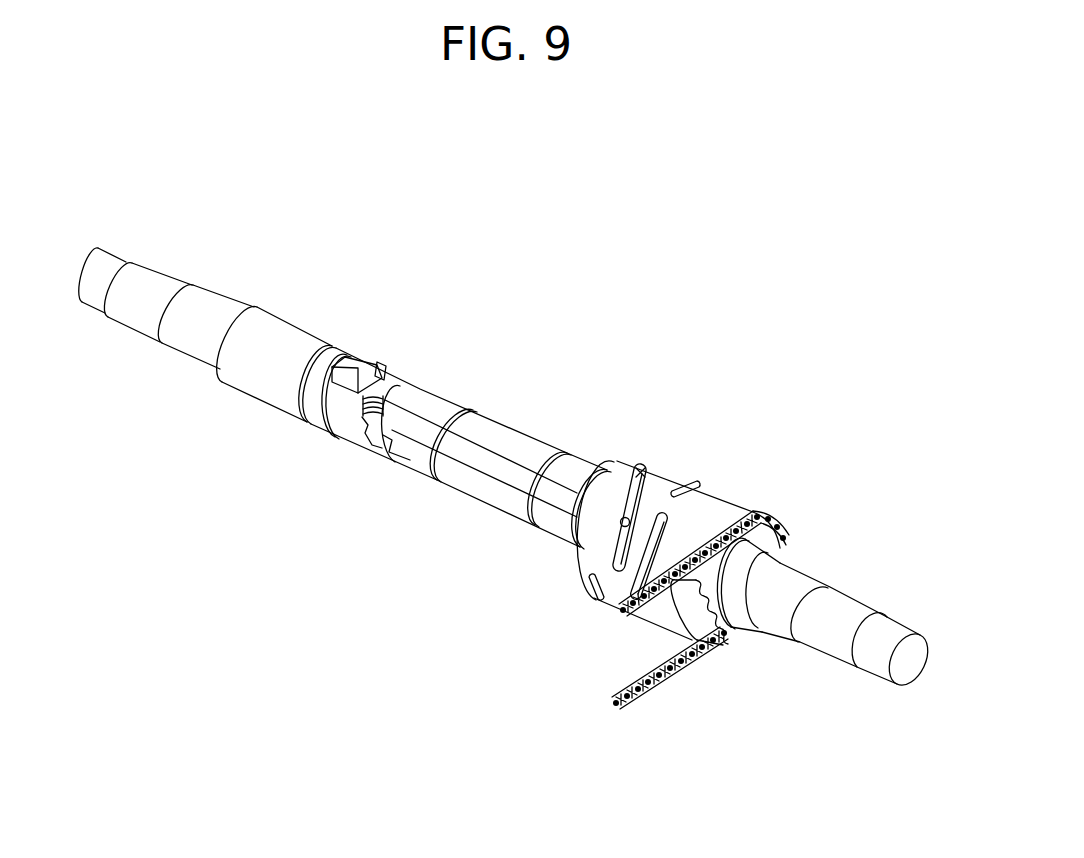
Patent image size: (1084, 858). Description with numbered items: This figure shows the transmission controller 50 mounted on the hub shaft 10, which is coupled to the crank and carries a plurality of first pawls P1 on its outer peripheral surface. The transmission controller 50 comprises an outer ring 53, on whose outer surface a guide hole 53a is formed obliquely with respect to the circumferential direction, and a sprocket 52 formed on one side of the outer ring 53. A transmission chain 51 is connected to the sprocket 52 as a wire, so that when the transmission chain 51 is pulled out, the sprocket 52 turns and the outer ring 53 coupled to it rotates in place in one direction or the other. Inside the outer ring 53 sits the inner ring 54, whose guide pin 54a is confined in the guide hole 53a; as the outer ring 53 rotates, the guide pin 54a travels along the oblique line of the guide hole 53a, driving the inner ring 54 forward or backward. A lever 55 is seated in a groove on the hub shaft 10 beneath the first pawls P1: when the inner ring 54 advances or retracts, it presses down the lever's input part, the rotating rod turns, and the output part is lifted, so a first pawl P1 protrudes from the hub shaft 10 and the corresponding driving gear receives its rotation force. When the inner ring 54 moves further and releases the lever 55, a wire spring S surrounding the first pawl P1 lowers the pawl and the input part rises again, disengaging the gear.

The hub shaft 10 is at (155, 282).
The transmission controller 50 is at (749, 428).
The first pawl P1 is at (377, 364).
The wire spring S is at (334, 410).
The lever 55 is at (477, 456).
The outer ring 53 is at (588, 552).
The guide hole 53a is at (603, 591).
The guide pin 54a is at (622, 514).
The inner ring 54 is at (640, 466).
The sprocket 52 is at (686, 592).
The transmission chain 51 is at (683, 658).